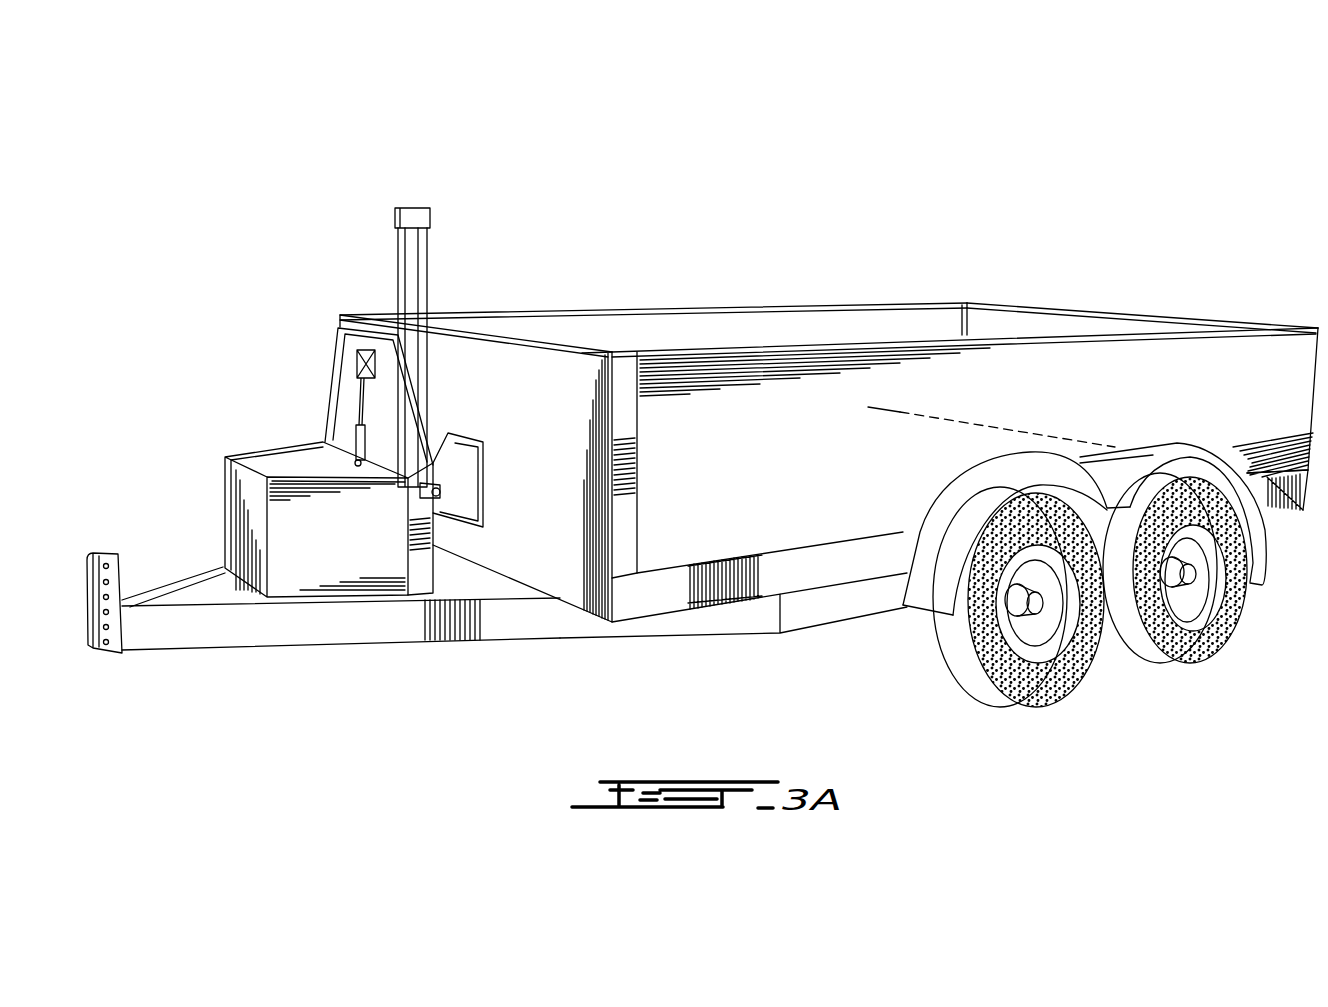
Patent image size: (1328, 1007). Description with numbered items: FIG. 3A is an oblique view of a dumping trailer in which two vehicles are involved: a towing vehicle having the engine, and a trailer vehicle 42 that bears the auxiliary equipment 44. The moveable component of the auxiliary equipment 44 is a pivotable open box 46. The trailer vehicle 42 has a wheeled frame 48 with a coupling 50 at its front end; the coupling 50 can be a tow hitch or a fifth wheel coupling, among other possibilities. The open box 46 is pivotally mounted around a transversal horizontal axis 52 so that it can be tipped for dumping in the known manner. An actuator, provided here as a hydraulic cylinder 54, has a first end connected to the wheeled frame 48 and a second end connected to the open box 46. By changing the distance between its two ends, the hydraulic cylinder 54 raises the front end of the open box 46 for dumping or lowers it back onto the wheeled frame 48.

The trailer vehicle 42 is at (1075, 182).
The auxiliary equipment 44 is at (346, 282).
The open box 46 is at (530, 372).
The wheeled frame 48 is at (813, 610).
The coupling 50 is at (160, 622).
The transversal horizontal axis 52 is at (895, 410).
The hydraulic cylinder 54 is at (410, 244).